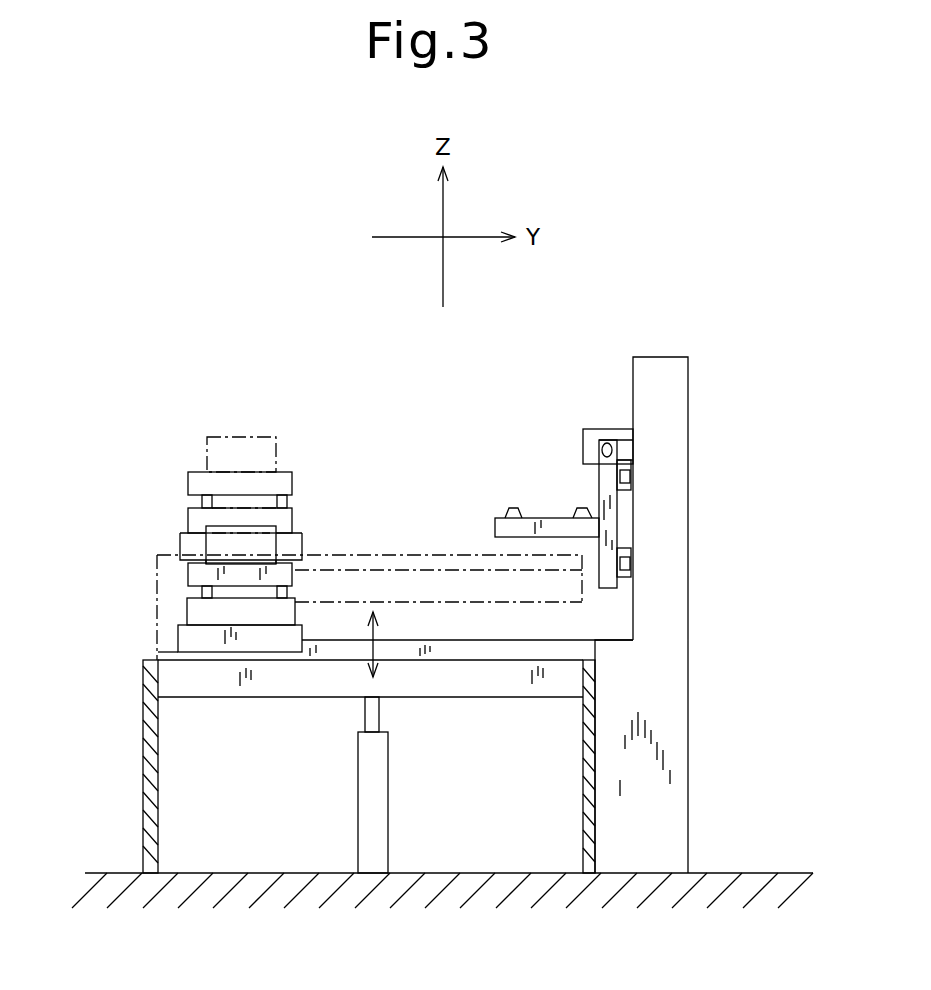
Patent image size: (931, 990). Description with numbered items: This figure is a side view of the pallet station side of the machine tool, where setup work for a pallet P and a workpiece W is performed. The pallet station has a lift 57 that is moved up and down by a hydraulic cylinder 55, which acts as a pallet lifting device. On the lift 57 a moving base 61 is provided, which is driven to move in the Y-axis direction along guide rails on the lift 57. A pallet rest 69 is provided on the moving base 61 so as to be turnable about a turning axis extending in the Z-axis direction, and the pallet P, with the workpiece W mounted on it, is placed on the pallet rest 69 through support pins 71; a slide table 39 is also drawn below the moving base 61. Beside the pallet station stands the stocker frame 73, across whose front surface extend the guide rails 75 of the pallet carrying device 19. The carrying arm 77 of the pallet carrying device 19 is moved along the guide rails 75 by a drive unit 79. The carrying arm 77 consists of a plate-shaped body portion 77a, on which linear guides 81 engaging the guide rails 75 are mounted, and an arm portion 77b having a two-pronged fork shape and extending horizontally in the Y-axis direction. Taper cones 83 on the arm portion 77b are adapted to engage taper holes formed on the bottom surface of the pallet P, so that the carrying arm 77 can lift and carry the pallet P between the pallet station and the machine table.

The pallet carrying device 19 is at (533, 443).
The slide table 39 is at (168, 682).
The hydraulic cylinder 55 is at (380, 813).
The lift 57 is at (160, 683).
The moving base 61 is at (178, 650).
The pallet rest 69 is at (190, 612).
The support pins 71 is at (200, 592).
The stocker frame 73 is at (668, 367).
The guide rails 75 is at (630, 477).
The carrying arm 77 is at (550, 517).
The plate-shaped body portion 77a is at (603, 485).
The arm portion 77b is at (500, 528).
The drive unit 79 is at (613, 440).
The linear guides 81 is at (630, 463).
The taper cones 83 is at (508, 517).
The workpiece W is at (206, 546).
The pallet P is at (188, 578).